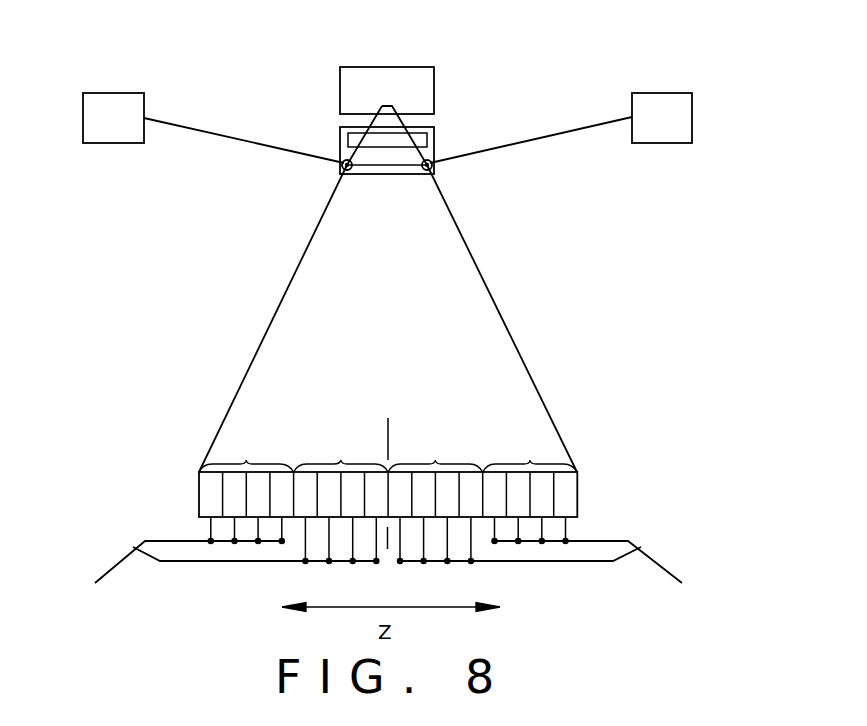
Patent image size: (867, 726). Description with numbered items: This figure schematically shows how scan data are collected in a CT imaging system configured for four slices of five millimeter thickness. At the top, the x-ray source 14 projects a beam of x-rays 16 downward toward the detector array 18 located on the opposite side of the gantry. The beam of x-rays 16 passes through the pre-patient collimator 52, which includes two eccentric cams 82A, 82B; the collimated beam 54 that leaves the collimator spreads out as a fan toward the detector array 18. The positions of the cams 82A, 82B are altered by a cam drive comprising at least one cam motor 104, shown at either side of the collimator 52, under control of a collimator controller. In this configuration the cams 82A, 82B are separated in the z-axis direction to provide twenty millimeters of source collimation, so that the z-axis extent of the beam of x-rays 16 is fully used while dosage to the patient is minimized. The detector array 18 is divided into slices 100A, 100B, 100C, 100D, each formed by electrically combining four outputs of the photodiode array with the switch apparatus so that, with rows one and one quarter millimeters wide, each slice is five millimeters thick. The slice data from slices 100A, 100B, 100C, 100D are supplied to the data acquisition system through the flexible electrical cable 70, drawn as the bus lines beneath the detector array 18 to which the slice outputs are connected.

The x-ray source 14 is at (435, 68).
The pre-patient collimator 52 is at (435, 137).
The eccentric cam 82A is at (345, 172).
The eccentric cam 82B is at (433, 172).
The cam motor 104 is at (103, 138).
The beam of x-rays 16 is at (270, 335).
The collimated beam 54 is at (508, 335).
The detector array 18 is at (590, 483).
The slice 100A is at (341, 493).
The slice 100B is at (435, 496).
The slice 100C is at (246, 484).
The slice 100D is at (530, 486).
The flexible electrical cable 70 is at (115, 568).